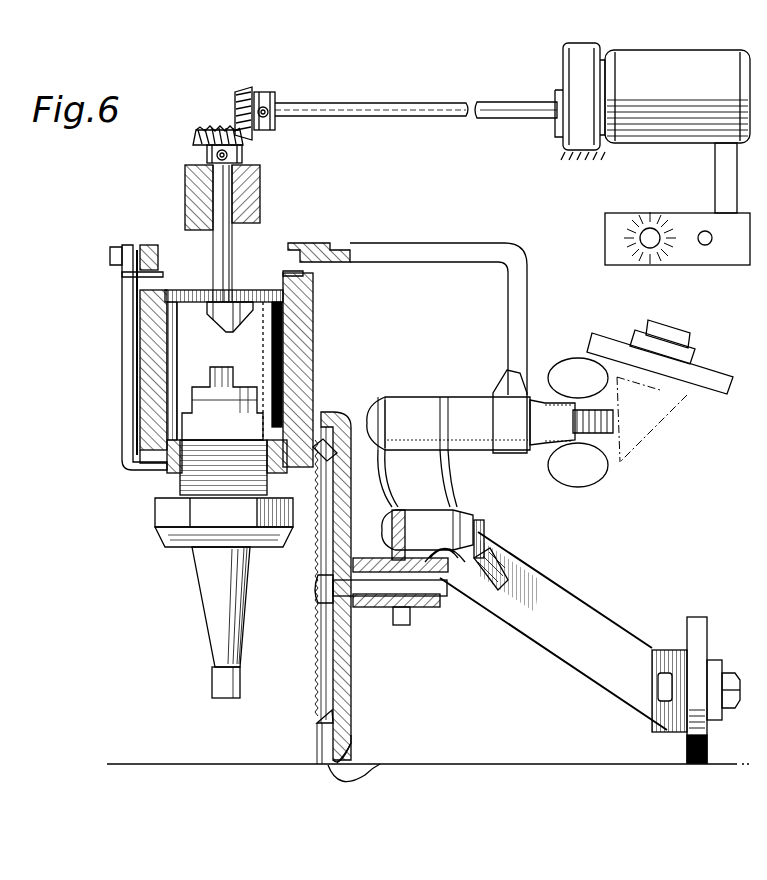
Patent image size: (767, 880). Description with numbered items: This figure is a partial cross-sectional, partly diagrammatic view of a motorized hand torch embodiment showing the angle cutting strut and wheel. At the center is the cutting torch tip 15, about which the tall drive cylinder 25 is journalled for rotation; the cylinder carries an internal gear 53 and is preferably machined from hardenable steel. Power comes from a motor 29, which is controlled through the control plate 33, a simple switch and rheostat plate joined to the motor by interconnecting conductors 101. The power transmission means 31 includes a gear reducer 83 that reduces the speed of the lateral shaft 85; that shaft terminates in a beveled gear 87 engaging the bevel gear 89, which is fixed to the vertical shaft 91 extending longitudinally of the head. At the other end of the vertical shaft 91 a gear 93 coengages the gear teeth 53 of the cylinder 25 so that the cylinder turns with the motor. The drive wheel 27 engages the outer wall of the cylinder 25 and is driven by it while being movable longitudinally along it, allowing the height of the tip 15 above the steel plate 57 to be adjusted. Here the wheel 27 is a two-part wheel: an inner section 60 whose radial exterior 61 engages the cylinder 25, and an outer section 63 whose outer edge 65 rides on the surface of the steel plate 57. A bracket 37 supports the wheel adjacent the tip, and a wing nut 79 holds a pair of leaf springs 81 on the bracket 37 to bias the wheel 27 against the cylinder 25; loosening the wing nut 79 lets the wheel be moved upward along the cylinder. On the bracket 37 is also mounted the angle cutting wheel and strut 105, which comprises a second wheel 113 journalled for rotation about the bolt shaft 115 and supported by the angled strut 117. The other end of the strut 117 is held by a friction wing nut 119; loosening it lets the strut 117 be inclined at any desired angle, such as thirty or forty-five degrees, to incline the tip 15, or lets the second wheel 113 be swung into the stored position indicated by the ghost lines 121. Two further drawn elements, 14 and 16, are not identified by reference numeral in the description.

The valve member 14 is at (225, 363).
The cutting torch tip 15 is at (218, 610).
The valve seat 16 is at (205, 375).
The drive cylinder 25 is at (308, 332).
The drive wheel 27 is at (351, 668).
The motor 29 is at (647, 130).
The power transmission means 31 is at (433, 167).
The control plate 33 is at (727, 242).
The bracket 37 is at (507, 328).
The internal gear 53 is at (267, 260).
The steel plate 57 is at (178, 764).
The inner section 60 is at (333, 672).
The radial exterior 61 is at (317, 723).
The outer section 63 is at (351, 743).
The outer edge 65 is at (355, 770).
The wing nut 79 is at (592, 473).
The leaf springs 81 is at (393, 488).
The gear reducer 83 is at (577, 68).
The lateral shaft 85 is at (366, 100).
The beveled gear 87 is at (255, 92).
The bevel gear 89 is at (222, 130).
The vertical shaft 91 is at (220, 245).
The gear 93 is at (162, 274).
The interconnecting conductors 101 is at (715, 178).
The angle cutting wheel and strut 105 is at (603, 615).
The second wheel 113 is at (687, 745).
The bolt shaft 115 is at (725, 673).
The angled strut 117 is at (553, 650).
The friction wing nut 119 is at (482, 548).
The ghost lines 121 is at (727, 387).